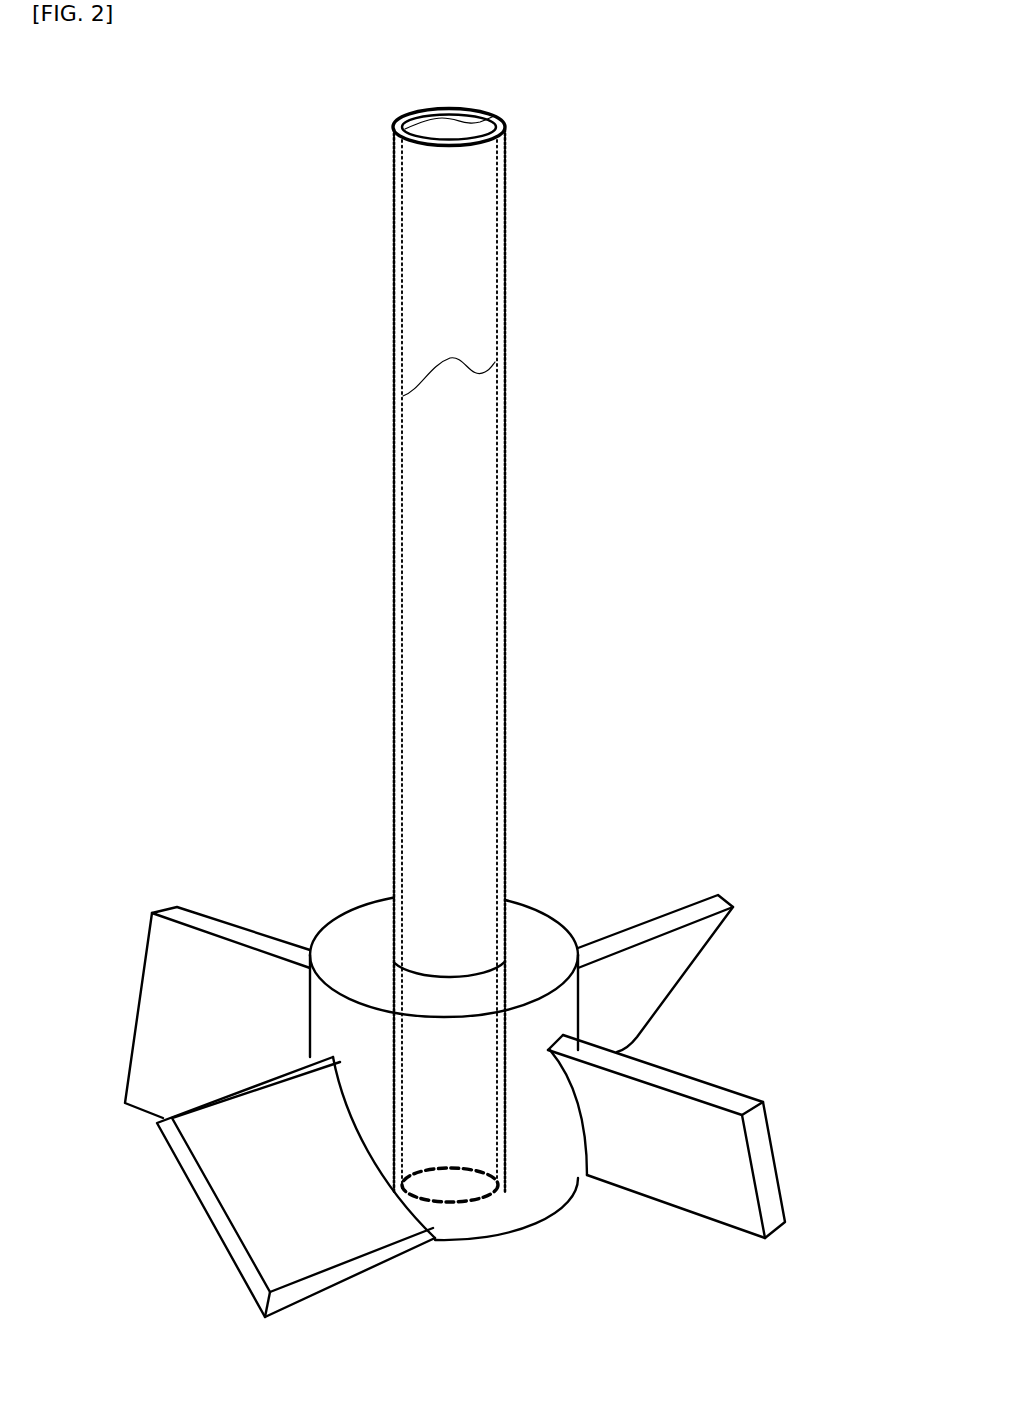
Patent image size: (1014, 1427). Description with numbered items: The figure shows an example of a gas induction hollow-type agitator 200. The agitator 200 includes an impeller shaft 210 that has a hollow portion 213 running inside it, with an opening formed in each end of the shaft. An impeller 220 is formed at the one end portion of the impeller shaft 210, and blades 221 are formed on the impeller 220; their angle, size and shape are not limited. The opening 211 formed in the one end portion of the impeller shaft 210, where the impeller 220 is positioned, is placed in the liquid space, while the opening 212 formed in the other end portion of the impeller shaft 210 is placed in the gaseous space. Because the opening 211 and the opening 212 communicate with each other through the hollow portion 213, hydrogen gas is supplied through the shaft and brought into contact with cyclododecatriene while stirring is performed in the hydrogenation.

The gas induction hollow-type agitator 200 is at (523, 173).
The impeller shaft 210 is at (505, 314).
The opening formed in a one end portion 211 is at (402, 1185).
The opening formed in the other end portion 212 is at (440, 118).
The hollow portion 213 is at (403, 396).
The impeller 220 is at (532, 933).
The blade 221 is at (635, 978).